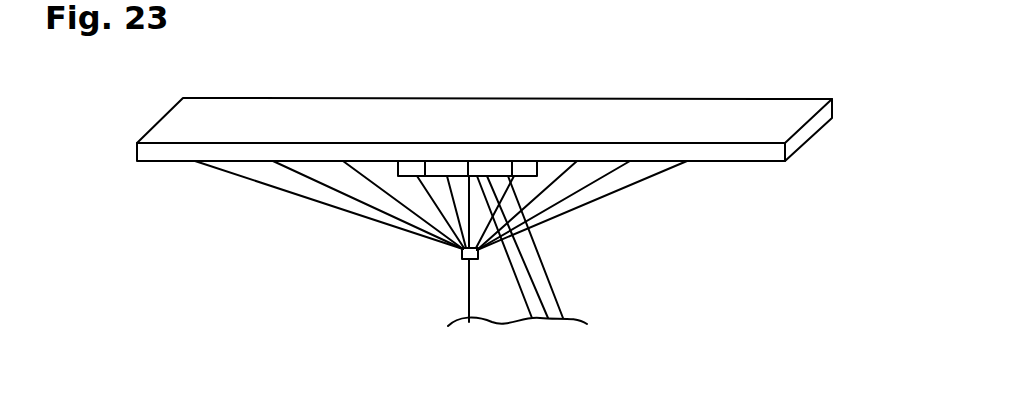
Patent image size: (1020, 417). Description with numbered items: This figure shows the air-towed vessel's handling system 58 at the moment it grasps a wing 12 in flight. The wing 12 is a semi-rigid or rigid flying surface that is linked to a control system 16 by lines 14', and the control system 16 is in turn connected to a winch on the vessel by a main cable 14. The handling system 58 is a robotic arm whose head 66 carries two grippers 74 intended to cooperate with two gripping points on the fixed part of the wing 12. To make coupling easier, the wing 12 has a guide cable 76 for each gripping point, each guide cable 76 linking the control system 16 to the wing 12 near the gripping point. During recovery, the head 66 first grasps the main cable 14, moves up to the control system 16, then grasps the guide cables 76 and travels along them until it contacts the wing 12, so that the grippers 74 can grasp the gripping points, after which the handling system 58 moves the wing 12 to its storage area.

The wing 12 is at (747, 117).
The grippers 74 is at (413, 168).
The head 66 is at (445, 168).
The guide cable 76 is at (403, 230).
The lines 14' is at (328, 215).
The handling system 58 is at (542, 267).
The control system 16 is at (462, 260).
The main cable 14 is at (477, 254).